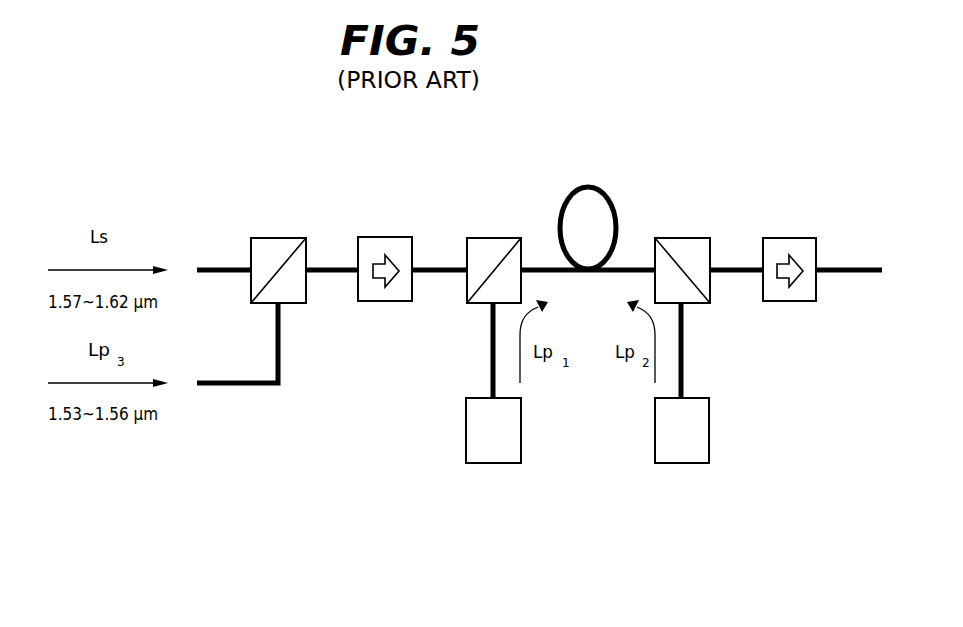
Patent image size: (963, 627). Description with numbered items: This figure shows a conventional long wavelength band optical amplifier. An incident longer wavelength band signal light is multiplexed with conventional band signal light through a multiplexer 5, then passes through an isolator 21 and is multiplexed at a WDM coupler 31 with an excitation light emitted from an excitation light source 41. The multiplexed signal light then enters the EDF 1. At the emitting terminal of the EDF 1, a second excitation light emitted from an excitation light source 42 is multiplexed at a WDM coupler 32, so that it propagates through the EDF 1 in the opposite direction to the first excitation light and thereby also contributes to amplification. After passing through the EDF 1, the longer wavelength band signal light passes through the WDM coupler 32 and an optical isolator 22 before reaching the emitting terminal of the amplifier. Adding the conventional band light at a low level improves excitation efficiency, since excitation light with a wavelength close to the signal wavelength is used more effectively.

The EDF 1 is at (611, 205).
The isolator 21 is at (358, 237).
The optical isolator 22 is at (816, 238).
The WDM coupler 31 is at (468, 238).
The WDM coupler 32 is at (710, 238).
The excitation light source 41 is at (466, 463).
The excitation light source 42 is at (709, 463).
The multiplexer 5 is at (252, 238).